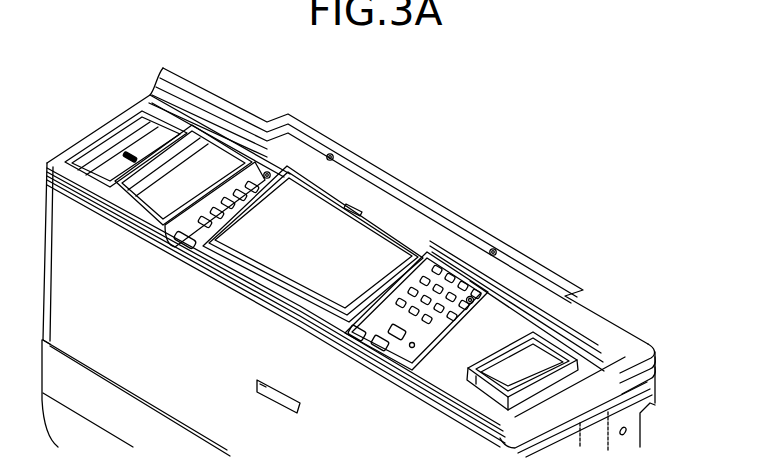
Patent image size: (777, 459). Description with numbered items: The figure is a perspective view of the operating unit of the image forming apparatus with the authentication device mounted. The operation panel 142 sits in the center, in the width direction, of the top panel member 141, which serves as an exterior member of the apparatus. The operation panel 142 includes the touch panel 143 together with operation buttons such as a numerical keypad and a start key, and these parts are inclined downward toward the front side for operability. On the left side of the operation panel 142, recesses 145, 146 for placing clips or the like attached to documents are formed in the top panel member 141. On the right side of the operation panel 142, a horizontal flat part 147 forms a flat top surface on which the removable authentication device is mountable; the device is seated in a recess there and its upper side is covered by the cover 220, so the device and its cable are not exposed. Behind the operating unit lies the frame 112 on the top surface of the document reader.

The frame 112 is at (600, 327).
The top panel member 141 is at (53, 157).
The operation panel 142 is at (411, 200).
The touch panel 143 is at (310, 223).
The recess 145 is at (182, 177).
The recess 146 is at (133, 147).
The horizontal flat part 147 is at (583, 382).
The cover 220 is at (530, 353).